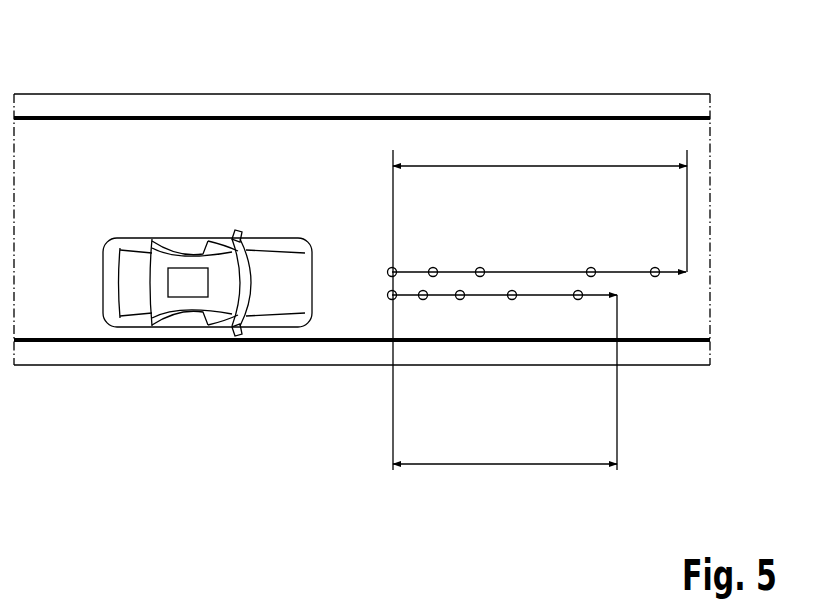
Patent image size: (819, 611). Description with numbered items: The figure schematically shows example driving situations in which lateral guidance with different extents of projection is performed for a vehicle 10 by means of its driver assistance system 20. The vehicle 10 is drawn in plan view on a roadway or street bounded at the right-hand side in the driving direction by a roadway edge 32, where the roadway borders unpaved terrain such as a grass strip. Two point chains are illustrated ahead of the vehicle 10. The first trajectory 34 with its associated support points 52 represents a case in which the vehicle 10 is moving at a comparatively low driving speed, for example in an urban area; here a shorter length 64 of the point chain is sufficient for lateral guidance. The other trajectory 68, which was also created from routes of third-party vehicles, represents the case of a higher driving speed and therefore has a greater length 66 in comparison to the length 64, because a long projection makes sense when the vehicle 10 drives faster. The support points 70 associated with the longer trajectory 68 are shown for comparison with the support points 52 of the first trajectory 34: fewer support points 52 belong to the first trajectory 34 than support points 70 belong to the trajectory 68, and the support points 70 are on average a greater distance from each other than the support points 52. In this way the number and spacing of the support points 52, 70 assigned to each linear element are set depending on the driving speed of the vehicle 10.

The vehicle 10 is at (265, 331).
The driver assistance system 20 is at (185, 286).
The roadway edge 32 is at (653, 365).
The trajectory 34 is at (494, 299).
The support points 52 is at (393, 299).
The length 64 is at (505, 470).
The length 66 is at (542, 166).
The trajectory 68 is at (531, 271).
The support points 70 is at (433, 268).